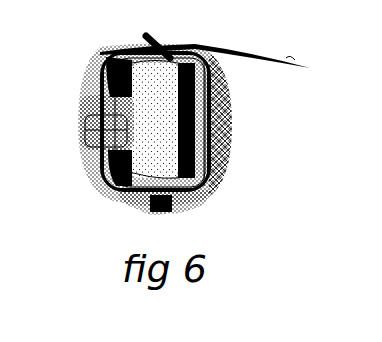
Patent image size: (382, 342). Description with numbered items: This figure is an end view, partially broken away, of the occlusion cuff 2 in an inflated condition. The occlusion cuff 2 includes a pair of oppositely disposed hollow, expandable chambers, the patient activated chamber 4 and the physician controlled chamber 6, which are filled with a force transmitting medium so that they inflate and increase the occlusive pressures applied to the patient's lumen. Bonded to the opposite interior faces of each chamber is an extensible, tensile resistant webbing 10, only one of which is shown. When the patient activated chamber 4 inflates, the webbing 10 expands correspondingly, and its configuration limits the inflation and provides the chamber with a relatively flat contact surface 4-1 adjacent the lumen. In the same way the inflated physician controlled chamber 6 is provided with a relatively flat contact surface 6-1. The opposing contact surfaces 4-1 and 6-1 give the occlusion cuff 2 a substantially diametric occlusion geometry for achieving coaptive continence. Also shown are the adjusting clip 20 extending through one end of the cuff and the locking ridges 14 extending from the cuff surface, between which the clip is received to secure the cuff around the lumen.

The occlusion cuff 2 is at (205, 190).
The patient activated chamber 4 is at (83, 108).
The relatively flat contact surface 4-1 is at (123, 167).
The physician controlled chamber 6 is at (192, 130).
The relatively flat contact surface 6-1 is at (178, 86).
The webbing 10 is at (92, 157).
The locking ridges 14 is at (212, 44).
The adjusting clip 20 is at (150, 38).